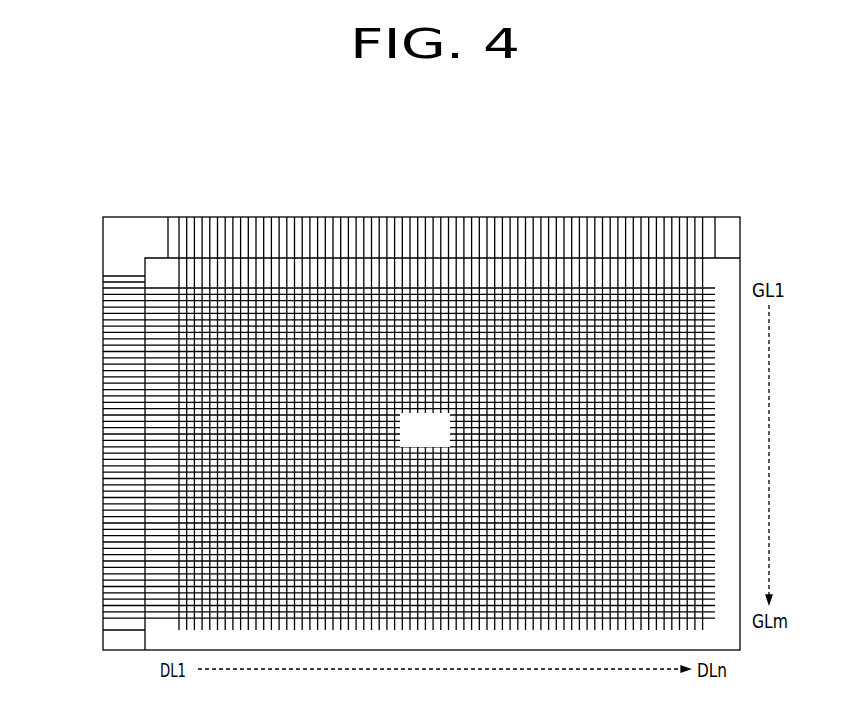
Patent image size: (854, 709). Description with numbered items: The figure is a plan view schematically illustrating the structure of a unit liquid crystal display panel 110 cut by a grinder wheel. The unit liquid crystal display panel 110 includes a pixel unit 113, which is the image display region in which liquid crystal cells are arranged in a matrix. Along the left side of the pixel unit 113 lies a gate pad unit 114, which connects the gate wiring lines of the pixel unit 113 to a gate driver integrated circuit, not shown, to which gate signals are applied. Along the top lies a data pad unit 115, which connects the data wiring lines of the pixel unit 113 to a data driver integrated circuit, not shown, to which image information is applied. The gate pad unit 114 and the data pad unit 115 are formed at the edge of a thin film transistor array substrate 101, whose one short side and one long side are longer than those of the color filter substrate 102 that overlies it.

The unit liquid crystal display panel 110 is at (770, 144).
The thin film transistor array substrate 101 is at (128, 228).
The color filter substrate 102 is at (154, 268).
The pixel unit 113 is at (439, 441).
The gate pad unit 114 is at (90, 632).
The data pad unit 115 is at (717, 211).